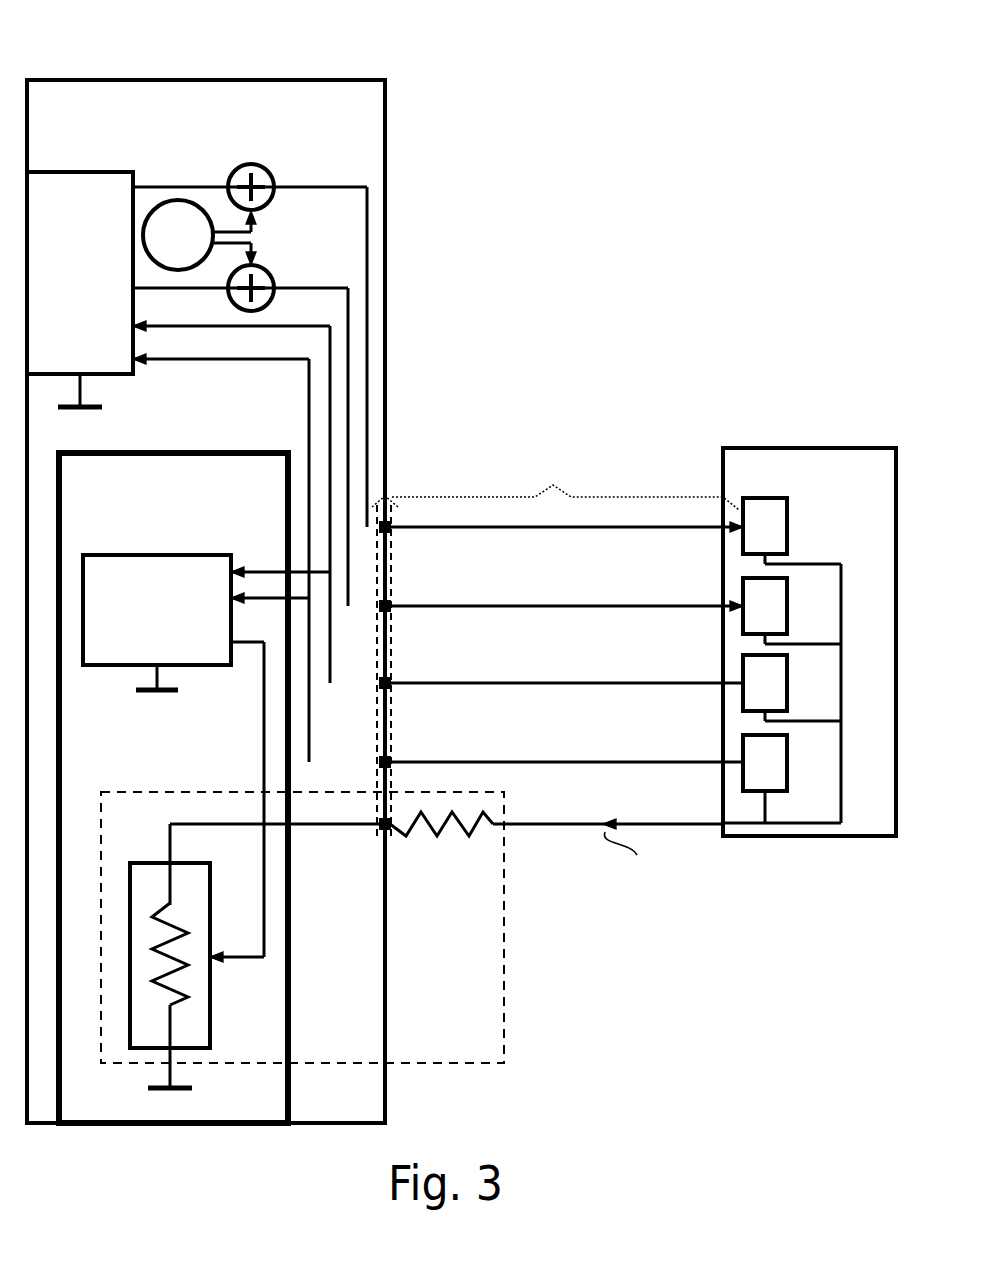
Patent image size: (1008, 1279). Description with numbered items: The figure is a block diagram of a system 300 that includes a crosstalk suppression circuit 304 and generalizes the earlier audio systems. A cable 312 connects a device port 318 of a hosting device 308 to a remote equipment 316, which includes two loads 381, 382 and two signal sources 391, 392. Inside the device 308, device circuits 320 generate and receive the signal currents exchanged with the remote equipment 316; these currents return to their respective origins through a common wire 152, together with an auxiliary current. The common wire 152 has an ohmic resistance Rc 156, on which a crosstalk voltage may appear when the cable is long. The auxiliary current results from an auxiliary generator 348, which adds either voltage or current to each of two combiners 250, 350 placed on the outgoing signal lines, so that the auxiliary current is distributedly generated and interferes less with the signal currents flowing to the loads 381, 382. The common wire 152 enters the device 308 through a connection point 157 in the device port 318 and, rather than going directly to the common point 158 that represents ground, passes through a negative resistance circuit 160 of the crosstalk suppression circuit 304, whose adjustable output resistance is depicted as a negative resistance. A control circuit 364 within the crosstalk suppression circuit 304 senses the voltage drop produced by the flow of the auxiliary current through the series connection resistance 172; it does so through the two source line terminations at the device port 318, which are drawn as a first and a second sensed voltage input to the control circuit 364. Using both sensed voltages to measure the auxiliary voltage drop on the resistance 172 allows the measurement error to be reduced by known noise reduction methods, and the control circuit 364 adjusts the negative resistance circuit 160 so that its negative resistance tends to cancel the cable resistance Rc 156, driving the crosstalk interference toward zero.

The system 300 is at (427, 68).
The device 308 is at (85, 80).
The device circuits 320 is at (107, 172).
The auxiliary generator 348 is at (181, 200).
The combiner 250 is at (272, 173).
The combiner 350 is at (272, 276).
The common point 158 is at (102, 408).
The crosstalk suppression circuit 304 is at (277, 453).
The control circuit 364 is at (125, 555).
The device port 318 is at (392, 498).
The cable 312 is at (655, 497).
The remote equipment 316 is at (775, 612).
The load 381 is at (743, 538).
The load 382 is at (743, 618).
The signal source 391 is at (743, 695).
The signal source 392 is at (743, 775).
The negative resistance circuit 160 is at (152, 863).
The connection point 157 is at (380, 832).
The ohmic resistance Rc 156 is at (432, 845).
The common wire 152 is at (560, 828).
The resistance 172 is at (504, 1012).